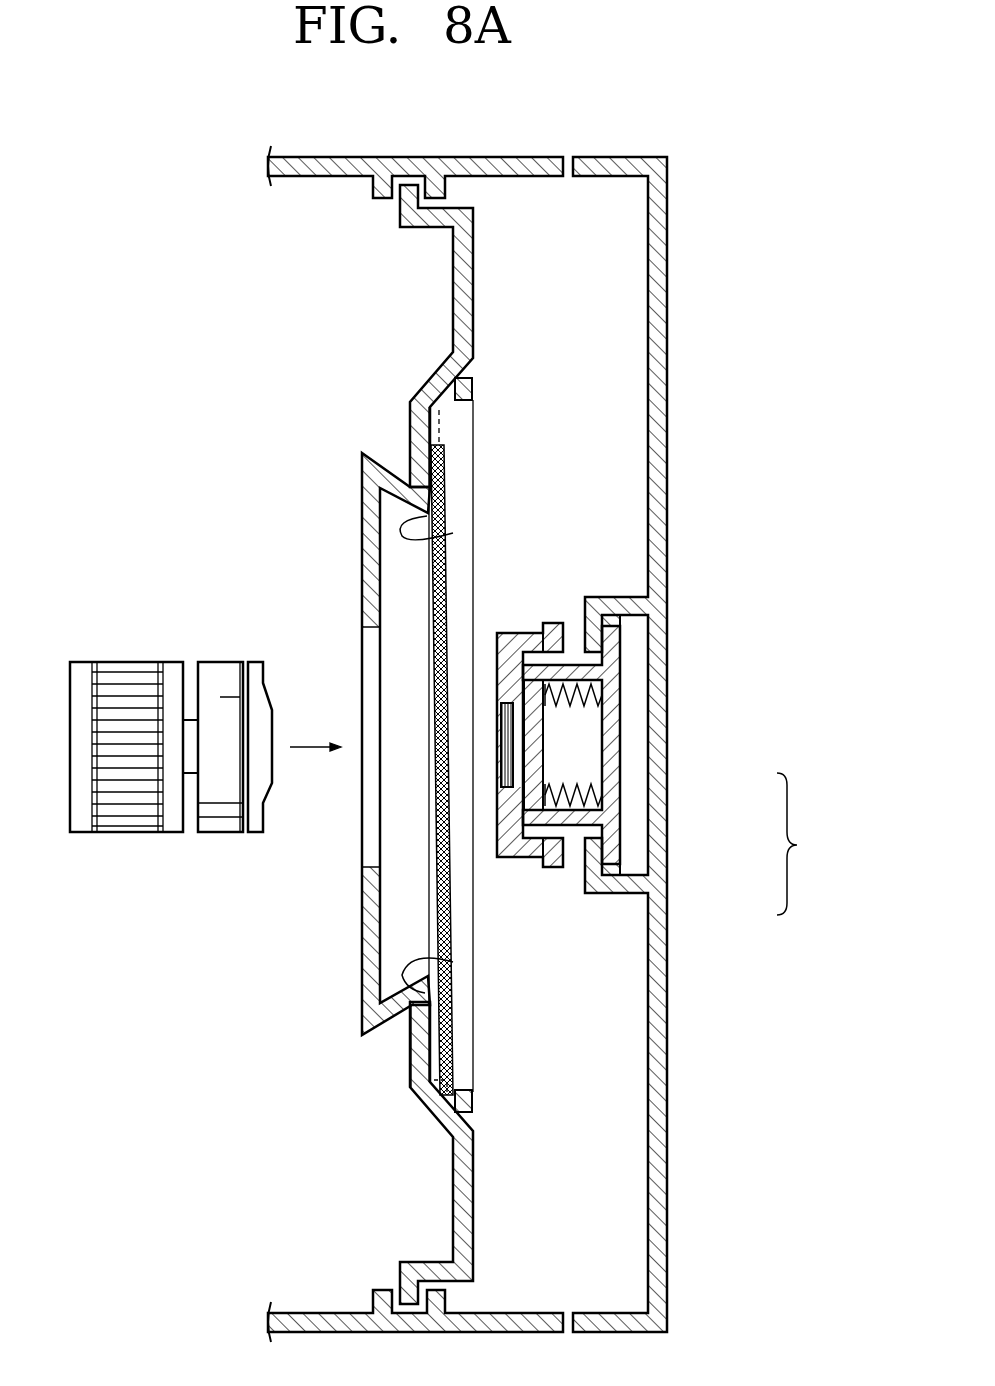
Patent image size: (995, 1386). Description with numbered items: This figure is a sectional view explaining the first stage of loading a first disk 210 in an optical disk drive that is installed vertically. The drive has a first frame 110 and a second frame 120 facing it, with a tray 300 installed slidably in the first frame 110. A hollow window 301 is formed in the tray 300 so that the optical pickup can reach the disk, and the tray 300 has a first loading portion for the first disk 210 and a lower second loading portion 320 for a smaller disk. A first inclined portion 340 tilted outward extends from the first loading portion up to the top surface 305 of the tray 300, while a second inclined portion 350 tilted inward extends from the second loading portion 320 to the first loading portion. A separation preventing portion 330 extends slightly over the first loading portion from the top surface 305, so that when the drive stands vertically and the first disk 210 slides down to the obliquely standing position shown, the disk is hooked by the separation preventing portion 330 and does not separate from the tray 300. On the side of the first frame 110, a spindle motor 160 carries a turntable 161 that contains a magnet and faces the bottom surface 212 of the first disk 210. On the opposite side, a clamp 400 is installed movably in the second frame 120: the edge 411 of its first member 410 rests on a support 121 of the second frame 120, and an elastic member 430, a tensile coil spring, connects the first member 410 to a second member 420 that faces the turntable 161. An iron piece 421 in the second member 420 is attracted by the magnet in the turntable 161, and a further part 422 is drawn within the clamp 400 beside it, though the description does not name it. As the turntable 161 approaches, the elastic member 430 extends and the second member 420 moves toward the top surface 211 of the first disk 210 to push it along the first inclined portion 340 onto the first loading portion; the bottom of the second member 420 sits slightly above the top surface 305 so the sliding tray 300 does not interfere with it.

The first frame 110 is at (419, 173).
The second frame 120 is at (668, 378).
The support 121 is at (621, 620).
The spindle motor 160 is at (127, 832).
The turntable 161 is at (217, 832).
The first disk 210 is at (452, 920).
The top surface of the first disk 211 is at (440, 1012).
The bottom surface of the first disk 212 is at (410, 1022).
The tray 300 is at (436, 305).
The hollow window 301 is at (370, 852).
The top surface of the tray 305 is at (474, 290).
The second loading portion 320 is at (388, 556).
The separation preventing portion 330 is at (461, 390).
The first inclined portion 340 is at (441, 432).
The second inclined portion 350 is at (453, 533).
The clamp 400 is at (553, 775).
The first member 410 is at (621, 832).
The edge of the first member 411 is at (594, 630).
The second member 420 is at (552, 868).
The iron piece 421 is at (543, 727).
The pad 422 is at (497, 641).
The elastic member 430 is at (577, 782).